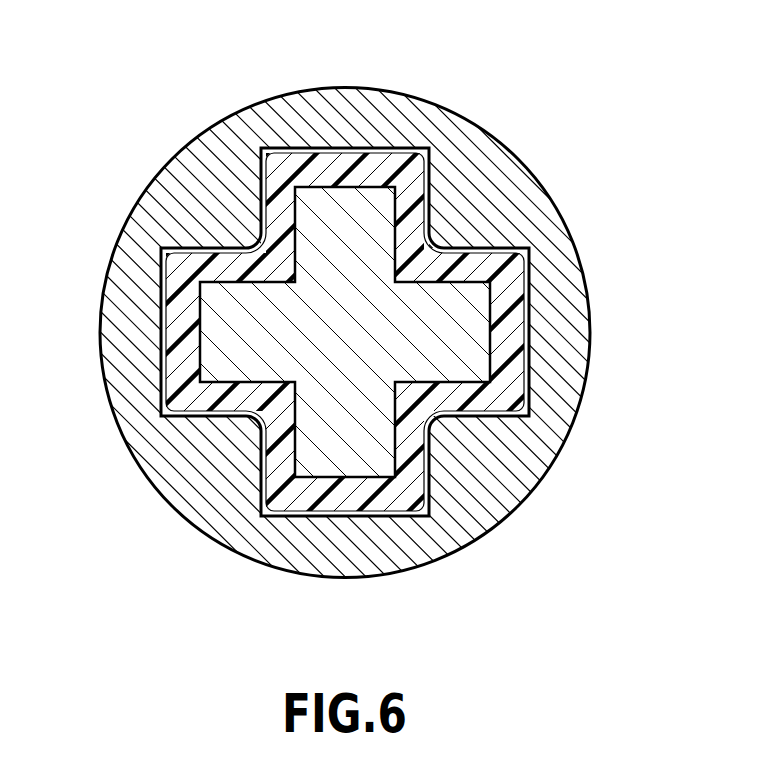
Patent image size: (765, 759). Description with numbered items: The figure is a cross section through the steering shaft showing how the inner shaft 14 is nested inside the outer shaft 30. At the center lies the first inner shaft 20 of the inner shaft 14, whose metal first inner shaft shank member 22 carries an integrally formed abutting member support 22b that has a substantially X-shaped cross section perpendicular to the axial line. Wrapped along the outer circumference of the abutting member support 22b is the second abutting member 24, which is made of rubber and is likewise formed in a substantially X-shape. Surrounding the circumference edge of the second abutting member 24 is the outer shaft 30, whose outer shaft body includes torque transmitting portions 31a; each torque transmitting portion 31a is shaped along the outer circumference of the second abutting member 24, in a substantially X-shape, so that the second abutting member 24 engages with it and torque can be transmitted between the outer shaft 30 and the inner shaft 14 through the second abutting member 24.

The outer shaft 30 is at (350, 88).
The torque transmitting portion 31a is at (222, 209).
The first inner shaft 20 is at (370, 289).
The inner shaft 14 is at (433, 205).
The second abutting member 24 is at (430, 478).
The first inner shaft shank member 22 is at (345, 348).
The abutting member support 22b is at (346, 457).